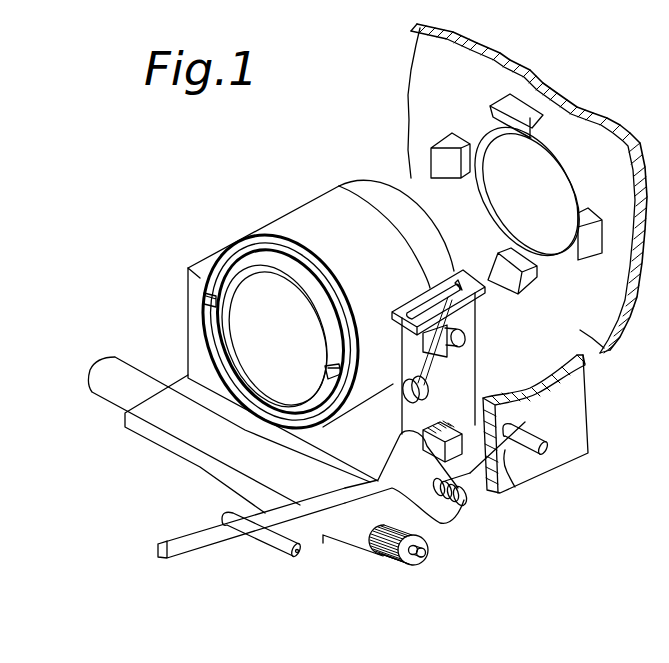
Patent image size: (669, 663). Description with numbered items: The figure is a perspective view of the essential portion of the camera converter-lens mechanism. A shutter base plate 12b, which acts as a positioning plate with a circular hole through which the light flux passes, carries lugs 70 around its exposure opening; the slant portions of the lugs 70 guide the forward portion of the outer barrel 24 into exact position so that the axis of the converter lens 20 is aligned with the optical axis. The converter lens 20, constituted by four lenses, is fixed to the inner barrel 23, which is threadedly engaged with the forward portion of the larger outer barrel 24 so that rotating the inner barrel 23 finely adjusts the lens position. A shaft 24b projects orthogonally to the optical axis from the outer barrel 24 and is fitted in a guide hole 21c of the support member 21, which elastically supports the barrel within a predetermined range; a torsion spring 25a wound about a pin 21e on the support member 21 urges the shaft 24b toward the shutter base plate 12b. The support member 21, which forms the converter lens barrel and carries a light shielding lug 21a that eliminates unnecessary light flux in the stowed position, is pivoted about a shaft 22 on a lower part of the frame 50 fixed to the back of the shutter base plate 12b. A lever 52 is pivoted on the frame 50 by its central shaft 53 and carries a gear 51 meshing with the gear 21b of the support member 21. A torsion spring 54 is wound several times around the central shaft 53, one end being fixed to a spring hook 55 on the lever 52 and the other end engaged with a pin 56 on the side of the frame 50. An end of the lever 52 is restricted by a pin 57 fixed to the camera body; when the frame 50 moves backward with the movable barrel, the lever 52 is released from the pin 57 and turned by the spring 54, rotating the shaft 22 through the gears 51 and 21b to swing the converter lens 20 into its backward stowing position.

The shutter base plate 12b is at (568, 104).
The lugs 70 is at (498, 108).
The outer barrel 24 is at (318, 197).
The inner barrel 23 is at (250, 248).
The converter lens 20 is at (245, 322).
The support member 21 is at (242, 398).
The light shielding lug 21a is at (146, 440).
The gear 21b is at (393, 553).
The guide hole 21c is at (423, 340).
The pin 21e is at (406, 393).
The shaft 24b is at (465, 338).
The torsion spring 25a is at (442, 358).
The spring hook 55 is at (458, 446).
The gear 51 is at (452, 513).
The lever 52 is at (312, 530).
The shaft 22 is at (420, 556).
The pin 57 is at (280, 560).
The central shaft 53 is at (465, 503).
The frame 50 is at (578, 438).
The torsion spring 54 is at (513, 483).
The pin 56 is at (533, 441).